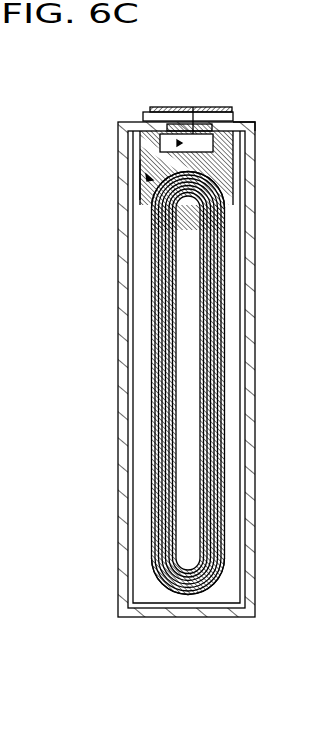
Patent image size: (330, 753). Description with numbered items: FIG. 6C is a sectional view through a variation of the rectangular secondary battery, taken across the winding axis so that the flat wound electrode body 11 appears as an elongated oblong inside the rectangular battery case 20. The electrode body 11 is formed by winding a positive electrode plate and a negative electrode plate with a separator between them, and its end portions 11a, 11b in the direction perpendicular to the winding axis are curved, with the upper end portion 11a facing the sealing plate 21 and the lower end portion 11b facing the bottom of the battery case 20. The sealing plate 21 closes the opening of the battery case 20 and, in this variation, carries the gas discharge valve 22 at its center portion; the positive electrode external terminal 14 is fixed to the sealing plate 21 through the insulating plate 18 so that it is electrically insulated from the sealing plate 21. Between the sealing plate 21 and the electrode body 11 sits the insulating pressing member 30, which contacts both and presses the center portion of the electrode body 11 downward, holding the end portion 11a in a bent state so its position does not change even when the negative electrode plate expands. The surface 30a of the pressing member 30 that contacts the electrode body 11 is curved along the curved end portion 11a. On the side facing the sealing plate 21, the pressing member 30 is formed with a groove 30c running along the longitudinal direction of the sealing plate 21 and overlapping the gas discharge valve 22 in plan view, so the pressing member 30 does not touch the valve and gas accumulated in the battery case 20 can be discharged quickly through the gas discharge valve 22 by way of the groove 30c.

The electrode body 11 is at (226, 352).
The end portion of the electrode body 11a is at (226, 198).
The end portion of the electrode body 11b is at (190, 596).
The positive electrode external terminal 14 is at (180, 106).
The insulating plate 18 is at (150, 107).
The battery case 20 is at (255, 461).
The sealing plate 21 is at (246, 119).
The gas discharge valve 22 is at (194, 106).
The pressing member 30 is at (181, 179).
The surface of the pressing member 30a is at (147, 176).
The groove 30c is at (150, 146).